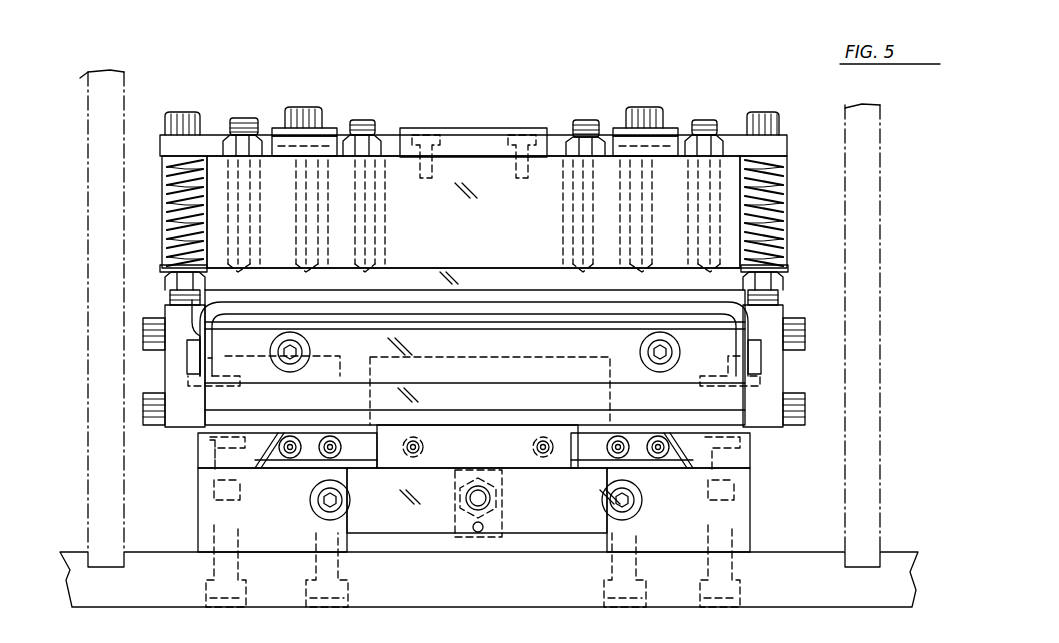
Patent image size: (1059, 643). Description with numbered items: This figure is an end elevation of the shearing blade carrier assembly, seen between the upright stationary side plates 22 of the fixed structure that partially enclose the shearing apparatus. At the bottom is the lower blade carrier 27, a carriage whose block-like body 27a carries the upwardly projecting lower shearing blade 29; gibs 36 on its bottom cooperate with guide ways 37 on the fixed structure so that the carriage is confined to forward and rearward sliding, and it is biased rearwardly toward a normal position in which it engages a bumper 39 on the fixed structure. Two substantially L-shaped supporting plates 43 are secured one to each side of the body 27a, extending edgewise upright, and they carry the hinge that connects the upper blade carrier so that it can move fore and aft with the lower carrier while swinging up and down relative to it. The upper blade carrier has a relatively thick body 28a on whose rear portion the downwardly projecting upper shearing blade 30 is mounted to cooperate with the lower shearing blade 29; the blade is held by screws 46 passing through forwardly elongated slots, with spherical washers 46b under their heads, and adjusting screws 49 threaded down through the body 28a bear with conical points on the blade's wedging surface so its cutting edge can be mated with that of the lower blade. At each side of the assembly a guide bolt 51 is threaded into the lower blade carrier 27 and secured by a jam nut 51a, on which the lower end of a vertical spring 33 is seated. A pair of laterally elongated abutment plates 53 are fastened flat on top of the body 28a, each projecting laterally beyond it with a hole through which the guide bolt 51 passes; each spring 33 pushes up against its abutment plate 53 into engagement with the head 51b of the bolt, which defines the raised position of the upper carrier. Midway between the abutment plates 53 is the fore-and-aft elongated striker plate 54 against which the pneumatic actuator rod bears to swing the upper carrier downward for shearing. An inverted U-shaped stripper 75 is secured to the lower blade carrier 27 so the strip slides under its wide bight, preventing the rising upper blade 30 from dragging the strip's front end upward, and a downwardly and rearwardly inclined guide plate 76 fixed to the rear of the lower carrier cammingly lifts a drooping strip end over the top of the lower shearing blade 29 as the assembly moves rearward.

The upright stationary side plates 22 is at (88, 452).
The lower blade carrier 27 is at (790, 372).
The body 27a is at (512, 405).
The body 28a is at (478, 223).
The lower shearing blade 29 is at (466, 350).
The upper shearing blade 30 is at (444, 272).
The vertical springs 33 is at (170, 190).
The gibs 36 is at (255, 450).
The guide ways 37 is at (202, 460).
The bumper 39 is at (548, 523).
The L-shaped supporting plates 43 is at (172, 368).
The screws 46 is at (304, 107).
The spherical washers 46b is at (362, 120).
The adjusting screws 49 is at (256, 96).
The guide bolts 51 is at (175, 214).
The jam nut 51a is at (172, 282).
The head 51b is at (185, 112).
The abutment plates 53 is at (162, 140).
The striker plate 54 is at (474, 128).
The stripper 75 is at (520, 302).
The guide plate 76 is at (552, 326).